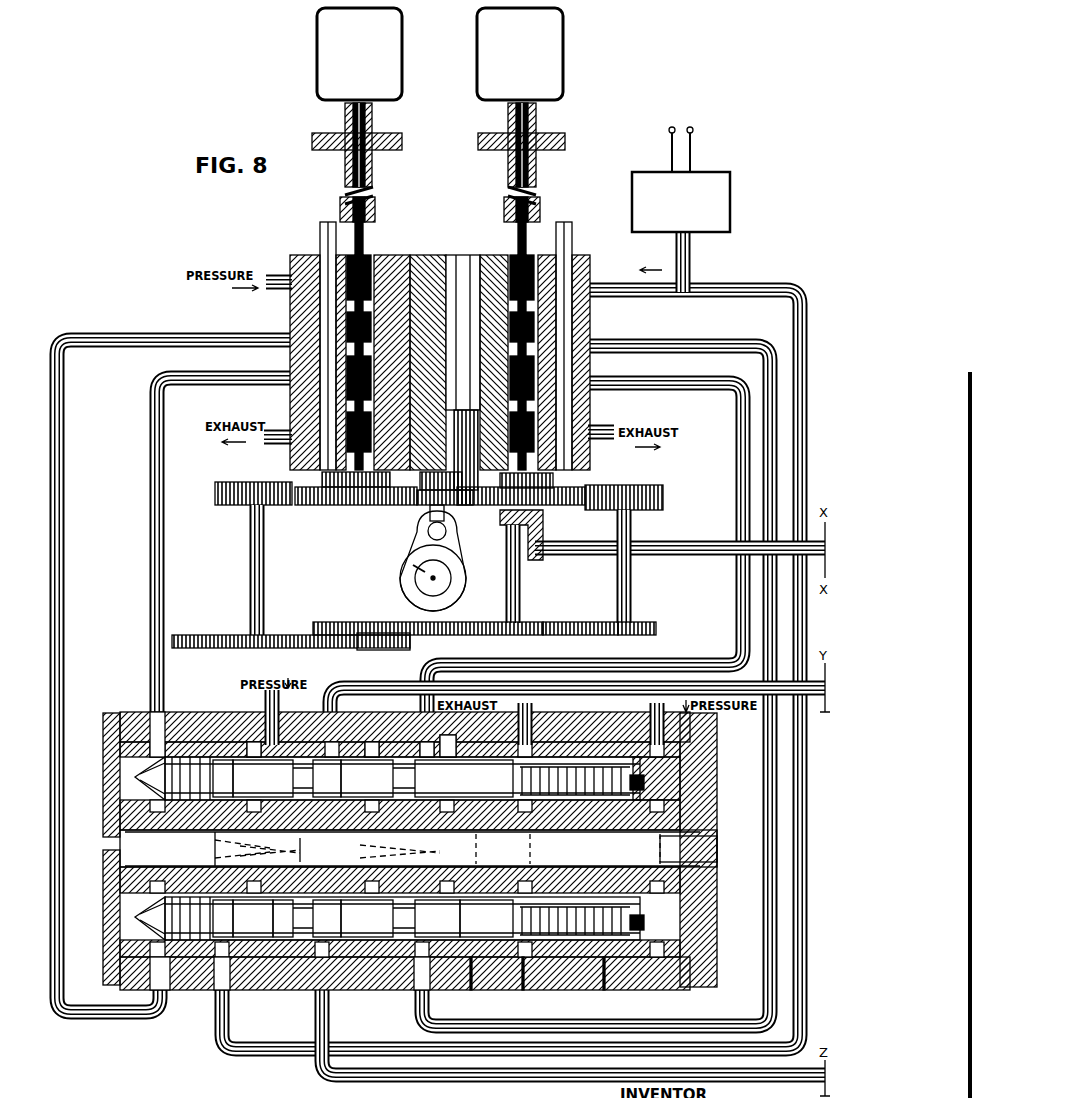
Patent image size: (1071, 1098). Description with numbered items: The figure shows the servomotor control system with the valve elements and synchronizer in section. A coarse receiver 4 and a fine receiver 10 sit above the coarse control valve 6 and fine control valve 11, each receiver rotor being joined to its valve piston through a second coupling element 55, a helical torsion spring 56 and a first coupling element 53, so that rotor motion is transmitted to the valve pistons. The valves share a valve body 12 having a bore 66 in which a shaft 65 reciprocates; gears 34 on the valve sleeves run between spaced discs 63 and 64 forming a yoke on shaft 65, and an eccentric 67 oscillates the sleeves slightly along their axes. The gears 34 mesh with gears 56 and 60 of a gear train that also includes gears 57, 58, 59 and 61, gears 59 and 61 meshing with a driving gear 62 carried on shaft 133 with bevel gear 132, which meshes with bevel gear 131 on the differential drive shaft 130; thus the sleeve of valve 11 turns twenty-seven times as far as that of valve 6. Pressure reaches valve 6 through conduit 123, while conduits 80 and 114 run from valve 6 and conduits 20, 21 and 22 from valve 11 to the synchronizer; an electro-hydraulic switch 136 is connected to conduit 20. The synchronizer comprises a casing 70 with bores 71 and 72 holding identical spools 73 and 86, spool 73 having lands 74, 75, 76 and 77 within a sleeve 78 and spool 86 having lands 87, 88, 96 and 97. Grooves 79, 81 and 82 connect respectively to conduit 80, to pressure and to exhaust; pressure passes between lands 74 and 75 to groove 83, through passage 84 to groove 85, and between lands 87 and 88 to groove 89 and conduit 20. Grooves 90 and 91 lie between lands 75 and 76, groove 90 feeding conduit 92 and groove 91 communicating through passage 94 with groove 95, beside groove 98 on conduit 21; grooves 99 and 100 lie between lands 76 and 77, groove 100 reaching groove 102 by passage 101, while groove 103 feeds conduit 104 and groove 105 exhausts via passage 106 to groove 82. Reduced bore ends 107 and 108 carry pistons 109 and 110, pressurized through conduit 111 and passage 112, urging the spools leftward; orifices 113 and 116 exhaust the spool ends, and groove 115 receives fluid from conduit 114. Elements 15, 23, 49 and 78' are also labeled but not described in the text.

The coarse receiver 4 is at (317, 42).
The fine receiver 10 is at (563, 43).
The second coupling element 55 is at (345, 160).
The helical torsion spring 56 is at (372, 190).
The first coupling element 53 is at (375, 209).
The coarse control valve 6 is at (320, 236).
The fine control valve 11 is at (560, 238).
The bore 66 is at (447, 240).
The valve body 12 is at (468, 236).
The shaft 65 is at (462, 390).
The spool valve 49 is at (290, 357).
The conduit 123 is at (284, 292).
The conduit 114 is at (262, 336).
The conduit 80 is at (268, 388).
The conduit 20 is at (742, 292).
The conduit 21 is at (738, 352).
The conduit 22 is at (672, 376).
The exhaust port 23 is at (594, 436).
The electro-hydraulic switch 136 is at (730, 188).
The hub 15 is at (322, 478).
The disc 63 is at (420, 484).
The gears 34 is at (348, 506).
The disc 64 is at (418, 512).
The eccentric 67 is at (420, 538).
The bevel gear 132 is at (500, 524).
The shaft 133 is at (452, 575).
The bevel gear 131 is at (540, 558).
The gear 60 is at (660, 492).
The differential drive shaft 130 is at (720, 558).
The gear 59 is at (376, 621).
The driving gear 62 is at (566, 622).
The gear 61 is at (636, 625).
The gear 57 is at (325, 650).
The gear 58 is at (355, 650).
The casing 70 is at (122, 712).
The sleeve 78 is at (97, 775).
The end block 78' is at (655, 746).
The conduit 111 is at (712, 735).
The bore 71 is at (200, 712).
The groove 79 is at (150, 712).
The groove 81 is at (250, 742).
The groove 90 is at (280, 692).
The groove 91 is at (372, 742).
The conduit 92 is at (362, 698).
The groove 99 is at (430, 742).
The groove 100 is at (456, 742).
The groove 82 is at (532, 708).
The reduced bore end 107 is at (612, 742).
The orifice 113 is at (135, 777).
The land 74 is at (208, 778).
The valve spool 73 is at (263, 778).
The land 75 is at (305, 778).
The land 76 is at (393, 778).
The land 77 is at (500, 778).
The piston 109 is at (638, 784).
The groove 83 is at (215, 838).
The passage 84 is at (280, 862).
The groove 85 is at (305, 846).
The passage 94 is at (365, 850).
The passage 101 is at (495, 849).
The passage 106 is at (535, 850).
The passage 112 is at (658, 850).
The orifice 116 is at (135, 917).
The land 87 is at (223, 918).
The valve spool 86 is at (253, 918).
The land 88 is at (281, 918).
The groove 103 is at (330, 918).
The groove 102 is at (393, 918).
The land 96 is at (446, 918).
The land 97 is at (500, 918).
The piston 110 is at (638, 924).
The groove 115 is at (145, 985).
The bore 72 is at (208, 990).
The groove 89 is at (250, 960).
The groove 98 is at (415, 990).
The groove 95 is at (478, 960).
The groove 105 is at (524, 960).
The reduced bore end 108 is at (605, 960).
The conduit 104 is at (422, 1080).